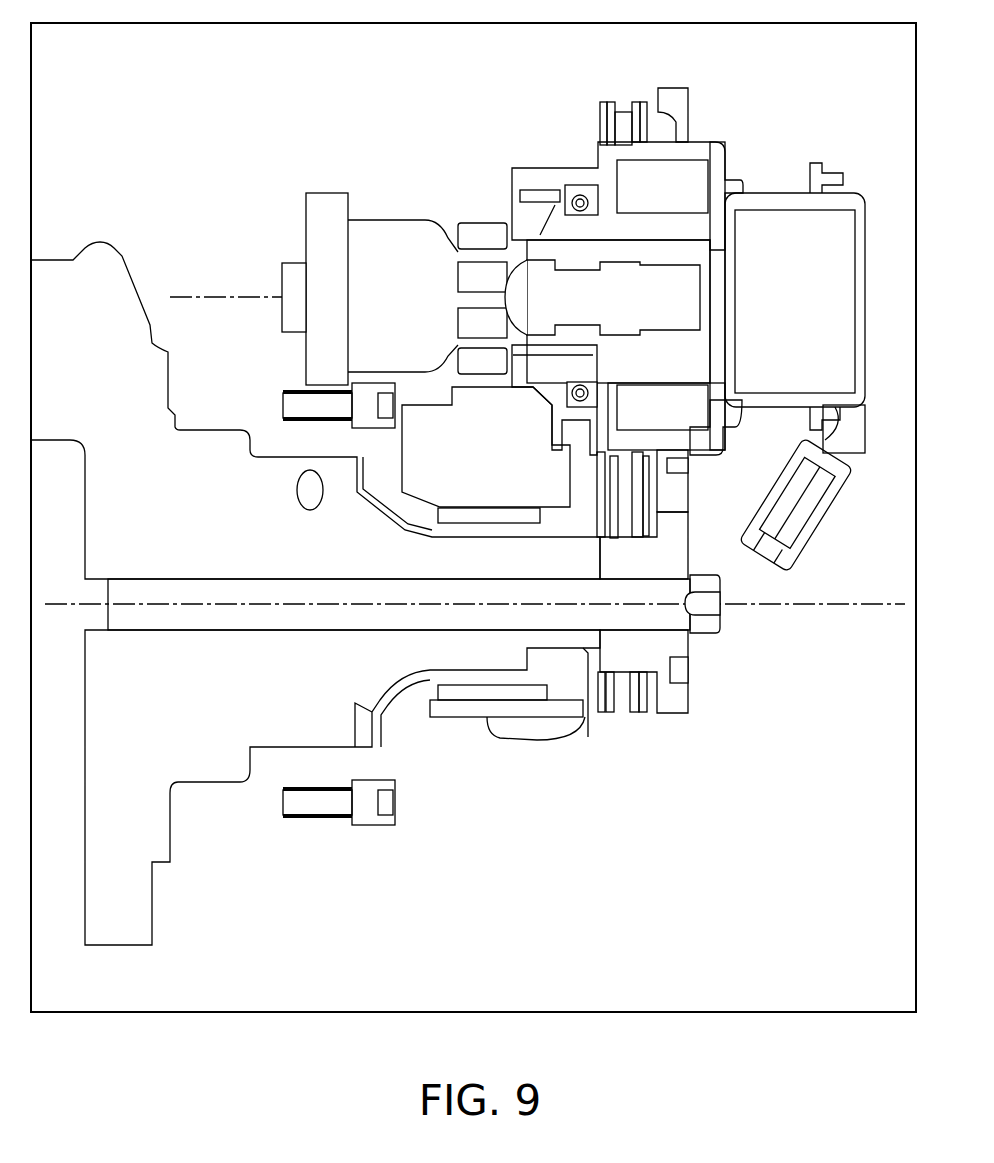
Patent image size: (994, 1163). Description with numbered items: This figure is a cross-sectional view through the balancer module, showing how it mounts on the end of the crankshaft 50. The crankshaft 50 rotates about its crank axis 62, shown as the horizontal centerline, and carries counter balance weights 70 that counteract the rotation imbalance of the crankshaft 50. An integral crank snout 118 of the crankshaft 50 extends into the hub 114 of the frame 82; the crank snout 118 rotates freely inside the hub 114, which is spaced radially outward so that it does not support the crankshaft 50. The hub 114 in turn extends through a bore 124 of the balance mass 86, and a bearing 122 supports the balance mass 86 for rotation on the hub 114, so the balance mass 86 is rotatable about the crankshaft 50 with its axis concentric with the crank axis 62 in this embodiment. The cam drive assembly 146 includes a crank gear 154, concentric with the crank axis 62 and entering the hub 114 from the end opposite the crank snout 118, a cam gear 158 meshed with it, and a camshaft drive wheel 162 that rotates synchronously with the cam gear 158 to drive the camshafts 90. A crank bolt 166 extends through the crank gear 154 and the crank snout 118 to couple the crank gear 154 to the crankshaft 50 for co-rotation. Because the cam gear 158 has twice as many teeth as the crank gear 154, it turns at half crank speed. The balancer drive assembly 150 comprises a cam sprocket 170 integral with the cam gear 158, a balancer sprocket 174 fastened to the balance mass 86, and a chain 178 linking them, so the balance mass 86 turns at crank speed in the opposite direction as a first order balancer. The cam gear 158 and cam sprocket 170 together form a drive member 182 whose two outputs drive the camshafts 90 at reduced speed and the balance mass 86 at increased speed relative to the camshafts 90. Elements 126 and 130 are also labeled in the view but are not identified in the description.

The crankshaft 50 is at (63, 428).
The crank axis 62 is at (797, 608).
The counter balance weights 70 is at (88, 795).
The frame 82 is at (370, 870).
The balance mass 86 is at (405, 445).
The camshafts 90 is at (405, 240).
The hub 114 is at (405, 715).
The crank snout 118 is at (270, 742).
The bearing 122 is at (470, 522).
The bore 124 is at (520, 497).
The axis 126 is at (190, 297).
The pulley flange 130 is at (330, 193).
The cam drive assembly 146 is at (702, 518).
The balancer drive assembly 150 is at (578, 487).
The crank gear 154 is at (690, 703).
The cam gear 158 is at (685, 100).
The camshaft drive wheel 162 is at (488, 222).
The crank bolt 166 is at (110, 583).
The cam sprocket 170 is at (635, 108).
The balancer sprocket 174 is at (618, 710).
The chain 178 is at (645, 702).
The drive member 182 is at (684, 68).